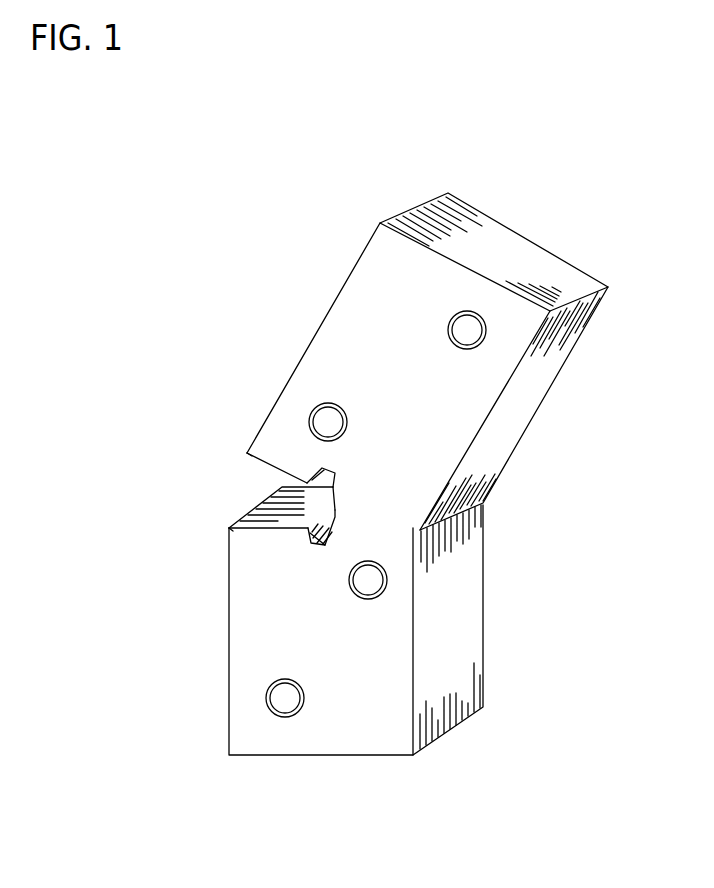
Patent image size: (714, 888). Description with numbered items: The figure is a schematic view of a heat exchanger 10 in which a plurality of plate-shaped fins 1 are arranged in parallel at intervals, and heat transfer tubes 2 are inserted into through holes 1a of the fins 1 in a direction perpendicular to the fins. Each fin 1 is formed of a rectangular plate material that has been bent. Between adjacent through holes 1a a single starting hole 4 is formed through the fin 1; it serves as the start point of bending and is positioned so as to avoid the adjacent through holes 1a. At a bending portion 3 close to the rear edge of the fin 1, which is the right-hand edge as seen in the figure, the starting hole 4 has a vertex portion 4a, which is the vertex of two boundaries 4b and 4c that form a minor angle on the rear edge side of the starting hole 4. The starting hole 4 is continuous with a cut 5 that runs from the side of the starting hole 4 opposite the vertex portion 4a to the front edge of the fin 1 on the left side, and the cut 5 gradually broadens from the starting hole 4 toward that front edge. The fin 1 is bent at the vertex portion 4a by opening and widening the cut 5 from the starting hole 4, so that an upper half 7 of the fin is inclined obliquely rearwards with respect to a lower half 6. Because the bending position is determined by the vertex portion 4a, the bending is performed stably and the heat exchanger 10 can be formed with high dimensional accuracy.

The heat exchanger 10 is at (532, 192).
The fin 1 is at (367, 268).
The through hole 1a is at (515, 347).
The heat transfer tube 2 is at (486, 332).
The bending portion 3 is at (483, 503).
The starting hole 4 is at (318, 545).
The vertex portion 4a is at (335, 510).
The boundary 4b is at (345, 487).
The boundary 4c is at (327, 541).
The cut 5 is at (268, 466).
The lower half 6 is at (252, 661).
The upper half 7 is at (322, 362).